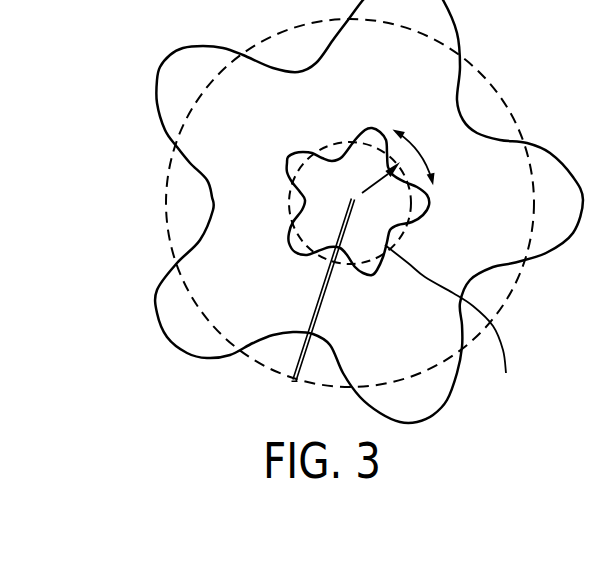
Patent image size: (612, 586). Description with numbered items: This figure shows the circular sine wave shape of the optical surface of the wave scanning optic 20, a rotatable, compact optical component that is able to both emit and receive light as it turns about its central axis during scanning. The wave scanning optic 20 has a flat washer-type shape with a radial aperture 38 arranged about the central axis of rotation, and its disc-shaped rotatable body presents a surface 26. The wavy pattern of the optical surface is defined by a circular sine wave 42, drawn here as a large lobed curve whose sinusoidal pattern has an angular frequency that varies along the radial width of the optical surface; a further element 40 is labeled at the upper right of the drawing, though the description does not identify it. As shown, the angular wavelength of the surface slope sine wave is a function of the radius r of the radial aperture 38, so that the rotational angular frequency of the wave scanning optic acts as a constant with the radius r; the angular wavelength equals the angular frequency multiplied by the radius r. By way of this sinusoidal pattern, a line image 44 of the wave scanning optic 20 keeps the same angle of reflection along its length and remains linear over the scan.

The wave scanning optic 20 is at (140, 163).
The surface 26 is at (167, 194).
The radial aperture 38 is at (291, 202).
The inner rotor profile 40 is at (578, 0).
The circular sine wave 42 is at (160, 68).
The line image 44 is at (301, 352).
The radius r is at (448, 320).